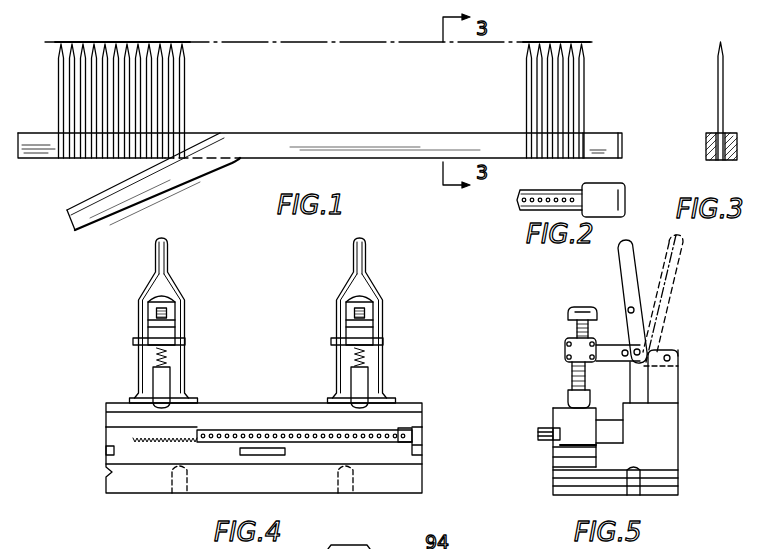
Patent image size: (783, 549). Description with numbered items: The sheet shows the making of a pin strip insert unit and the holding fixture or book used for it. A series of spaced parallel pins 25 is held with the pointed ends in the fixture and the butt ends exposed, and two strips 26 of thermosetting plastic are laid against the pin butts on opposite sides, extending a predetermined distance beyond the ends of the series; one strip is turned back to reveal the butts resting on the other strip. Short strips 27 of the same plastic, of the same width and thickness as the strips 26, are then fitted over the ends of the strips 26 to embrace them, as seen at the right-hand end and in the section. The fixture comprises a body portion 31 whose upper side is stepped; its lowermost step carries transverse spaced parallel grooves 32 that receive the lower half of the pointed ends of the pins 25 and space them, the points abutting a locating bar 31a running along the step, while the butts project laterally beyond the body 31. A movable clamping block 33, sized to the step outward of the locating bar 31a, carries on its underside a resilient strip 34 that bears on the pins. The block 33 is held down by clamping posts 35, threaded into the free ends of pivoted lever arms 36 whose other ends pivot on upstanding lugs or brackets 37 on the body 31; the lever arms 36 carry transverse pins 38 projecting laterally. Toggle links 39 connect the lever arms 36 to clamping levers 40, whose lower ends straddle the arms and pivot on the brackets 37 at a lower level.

In FIG. 1, the pins 25 is at (183, 108).
In FIG. 2, the pins 25 is at (572, 176).
In FIG. 3, the pins 25 is at (718, 61).
In FIG. 1, the strips of thermosetting plastic 26 is at (45, 150).
In FIG. 2, the strips of thermosetting plastic 26 is at (532, 192).
In FIG. 3, the strips of thermosetting plastic 26 is at (727, 133).
In FIG. 4, the strips of thermosetting plastic 26 is at (268, 430).
In FIG. 1, the short strips 27 is at (613, 148).
In FIG. 2, the short strips 27 is at (612, 183).
In FIG. 3, the short strips 27 is at (706, 143).
In FIG. 4, the short strips 27 is at (412, 438).
In FIG. 4, the body portion 31 is at (392, 479).
In FIG. 5, the body portion 31 is at (672, 456).
In FIG. 5, the locating bar 31a is at (617, 433).
In FIG. 4, the grooves 32 is at (152, 442).
In FIG. 4, the clamping block 33 is at (413, 420).
In FIG. 5, the clamping block 33 is at (563, 419).
In FIG. 5, the resilient strip 34 is at (554, 440).
In FIG. 4, the clamping posts 35 is at (163, 382).
In FIG. 5, the clamping posts 35 is at (575, 373).
In FIG. 4, the lever arms 36 is at (167, 335).
In FIG. 5, the lever arms 36 is at (602, 351).
In FIG. 5, the lugs or brackets 37 is at (678, 362).
In FIG. 4, the pins 38 is at (385, 343).
In FIG. 5, the pins 38 is at (626, 358).
In FIG. 5, the links 39 is at (670, 320).
In FIG. 4, the clamping levers 40 is at (166, 263).
In FIG. 5, the clamping levers 40 is at (634, 275).